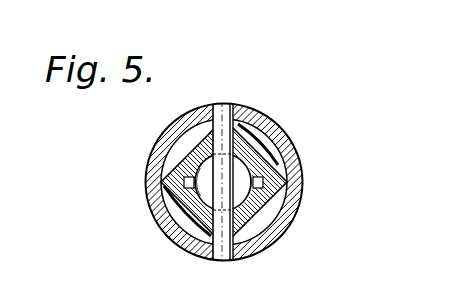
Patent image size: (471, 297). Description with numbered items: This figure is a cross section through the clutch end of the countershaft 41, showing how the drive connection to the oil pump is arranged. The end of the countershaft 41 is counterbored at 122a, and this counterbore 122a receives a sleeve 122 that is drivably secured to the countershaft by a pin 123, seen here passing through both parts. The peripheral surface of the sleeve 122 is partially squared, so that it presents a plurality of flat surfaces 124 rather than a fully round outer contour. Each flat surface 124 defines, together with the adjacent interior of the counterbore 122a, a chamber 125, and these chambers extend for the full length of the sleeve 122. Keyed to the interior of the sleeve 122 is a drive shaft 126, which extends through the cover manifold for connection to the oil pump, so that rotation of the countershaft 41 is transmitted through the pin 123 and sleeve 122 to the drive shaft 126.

The sleeve 122 is at (302, 173).
The counterbore 122a is at (250, 127).
The countershaft 41 is at (273, 140).
The pin 123 is at (217, 105).
The flat surfaces 124 is at (264, 153).
The chamber 125 is at (262, 212).
The drive shaft 126 is at (170, 208).